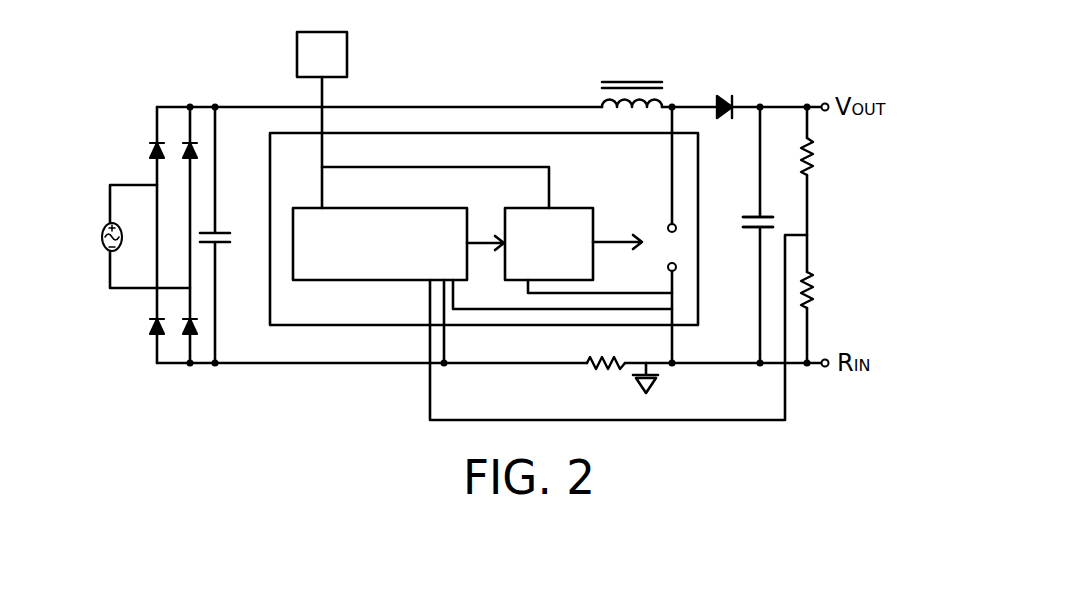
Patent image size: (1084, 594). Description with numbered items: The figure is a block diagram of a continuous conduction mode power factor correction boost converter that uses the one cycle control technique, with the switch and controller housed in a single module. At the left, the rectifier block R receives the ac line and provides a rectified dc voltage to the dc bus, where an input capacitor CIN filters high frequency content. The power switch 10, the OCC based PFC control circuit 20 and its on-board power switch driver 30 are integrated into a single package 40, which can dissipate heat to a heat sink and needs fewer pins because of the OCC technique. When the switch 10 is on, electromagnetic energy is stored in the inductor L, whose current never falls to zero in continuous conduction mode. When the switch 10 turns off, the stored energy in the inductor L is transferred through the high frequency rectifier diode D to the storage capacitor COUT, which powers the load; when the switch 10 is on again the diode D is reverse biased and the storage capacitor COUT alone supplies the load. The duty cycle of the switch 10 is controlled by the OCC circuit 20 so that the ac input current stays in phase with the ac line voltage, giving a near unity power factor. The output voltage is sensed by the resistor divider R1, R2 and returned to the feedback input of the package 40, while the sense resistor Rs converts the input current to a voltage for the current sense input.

The power switch 10 is at (675, 263).
The OCC based PFC control circuit 20 is at (455, 225).
The power switch driver 30 is at (575, 223).
The single package 40 is at (382, 133).
The rectifier block R is at (173, 120).
The inductor L is at (630, 82).
The high frequency rectifier diode D is at (718, 92).
The input capacitor CIN is at (223, 246).
The storage capacitor COUT is at (775, 216).
The resistor divider resistor R1 is at (827, 156).
The resistor divider resistor R2 is at (827, 289).
The sense resistor Rs is at (606, 379).